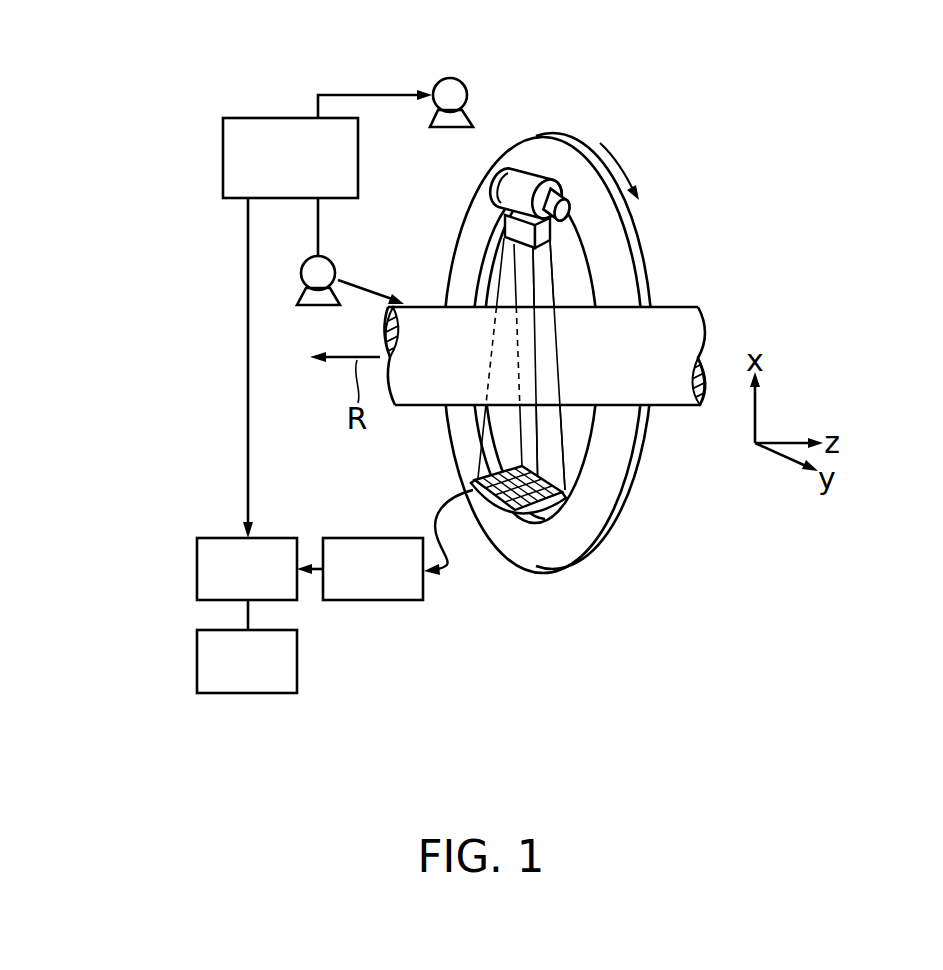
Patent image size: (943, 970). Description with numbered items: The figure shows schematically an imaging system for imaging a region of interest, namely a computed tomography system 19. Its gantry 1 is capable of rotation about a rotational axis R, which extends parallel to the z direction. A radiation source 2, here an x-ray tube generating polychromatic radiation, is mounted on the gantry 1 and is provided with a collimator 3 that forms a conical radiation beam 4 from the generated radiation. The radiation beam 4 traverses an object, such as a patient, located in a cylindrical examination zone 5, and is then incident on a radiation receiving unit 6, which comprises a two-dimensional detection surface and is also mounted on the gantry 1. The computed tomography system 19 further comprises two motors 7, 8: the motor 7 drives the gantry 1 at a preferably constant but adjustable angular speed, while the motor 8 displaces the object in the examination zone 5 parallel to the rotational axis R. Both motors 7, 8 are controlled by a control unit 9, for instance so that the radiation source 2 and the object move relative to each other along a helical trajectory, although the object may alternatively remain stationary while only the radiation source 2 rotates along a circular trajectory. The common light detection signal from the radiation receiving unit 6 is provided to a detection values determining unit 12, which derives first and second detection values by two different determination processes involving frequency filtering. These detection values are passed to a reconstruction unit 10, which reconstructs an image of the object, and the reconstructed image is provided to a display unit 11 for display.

The gantry 1 is at (598, 502).
The radiation source 2 is at (518, 180).
The collimator 3 is at (553, 232).
The radiation beam 4 is at (538, 453).
The examination zone 5 is at (425, 305).
The radiation receiving unit 6 is at (503, 522).
The motor 7 is at (460, 78).
The motor 8 is at (334, 262).
The control unit 9 is at (260, 118).
The reconstruction unit 10 is at (197, 567).
The display unit 11 is at (197, 661).
The detection values determining unit 12 is at (377, 600).
The computed tomography system 19 is at (599, 343).